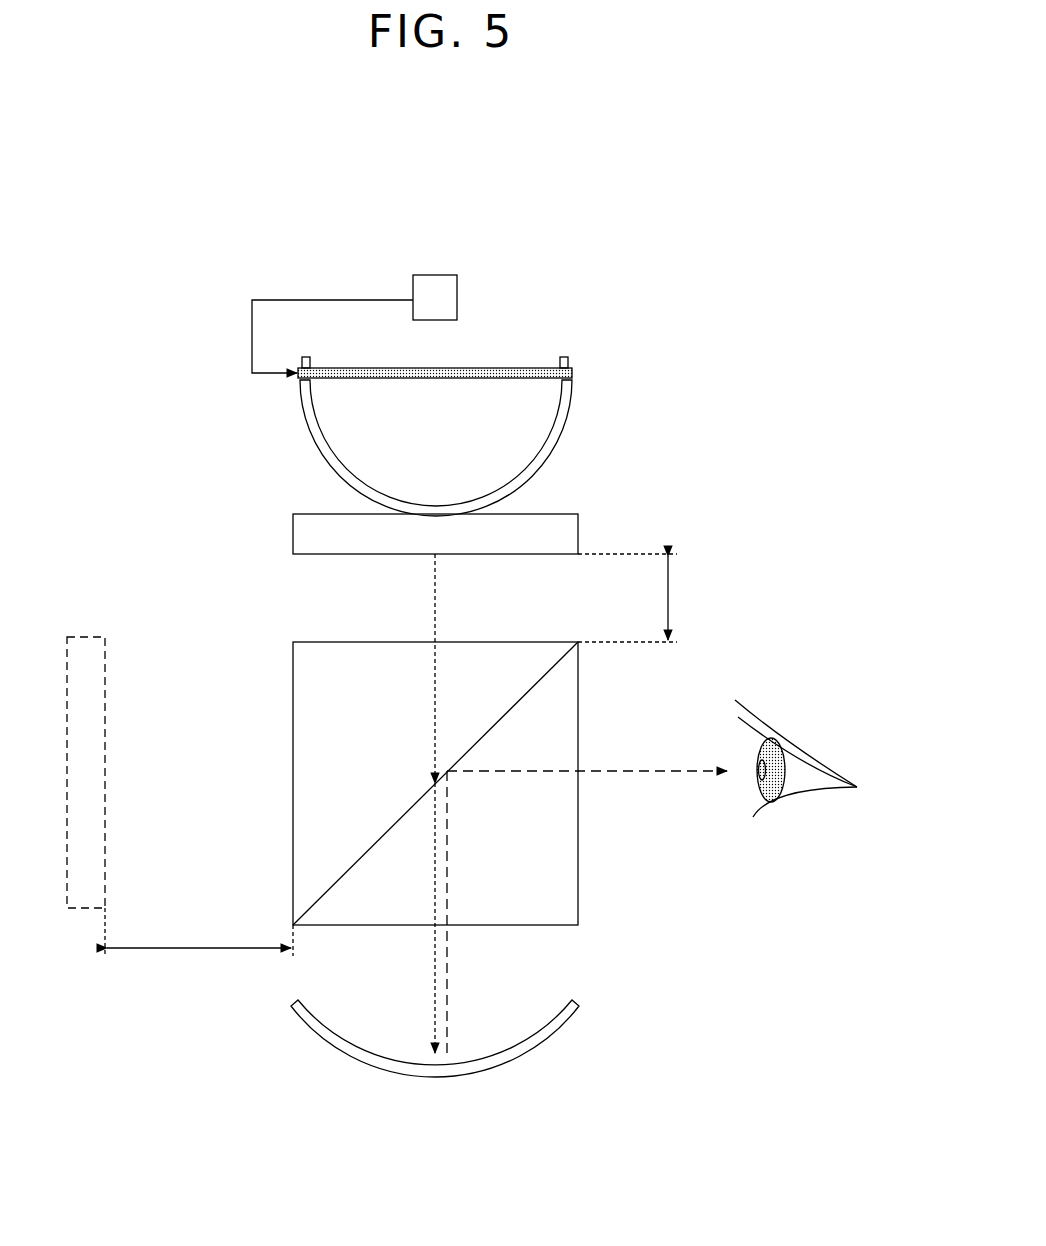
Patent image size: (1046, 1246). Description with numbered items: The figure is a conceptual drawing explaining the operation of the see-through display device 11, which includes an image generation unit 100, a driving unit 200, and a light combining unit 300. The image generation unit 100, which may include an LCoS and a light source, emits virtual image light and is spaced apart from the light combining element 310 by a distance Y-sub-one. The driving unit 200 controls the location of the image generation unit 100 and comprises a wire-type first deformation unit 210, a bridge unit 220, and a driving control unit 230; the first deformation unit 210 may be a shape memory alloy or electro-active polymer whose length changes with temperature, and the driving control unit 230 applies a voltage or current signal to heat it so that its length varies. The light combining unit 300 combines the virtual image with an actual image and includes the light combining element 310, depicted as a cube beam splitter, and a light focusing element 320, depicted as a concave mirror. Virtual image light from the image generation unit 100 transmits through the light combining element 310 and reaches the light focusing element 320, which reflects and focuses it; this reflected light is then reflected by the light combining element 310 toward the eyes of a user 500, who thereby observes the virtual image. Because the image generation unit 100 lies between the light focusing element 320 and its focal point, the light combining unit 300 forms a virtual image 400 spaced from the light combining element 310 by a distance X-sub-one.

The see-through display device 11 is at (745, 262).
The image generation unit 100 is at (578, 528).
The driving unit 200 is at (664, 298).
The first deformation unit 210 is at (572, 374).
The bridge unit 220 is at (571, 402).
The driving control unit 230 is at (457, 300).
The light combining unit 300 is at (681, 890).
The light combining element 310 is at (578, 893).
The light focusing element 320 is at (577, 1003).
The virtual image 400 is at (87, 637).
The user 500 is at (803, 790).